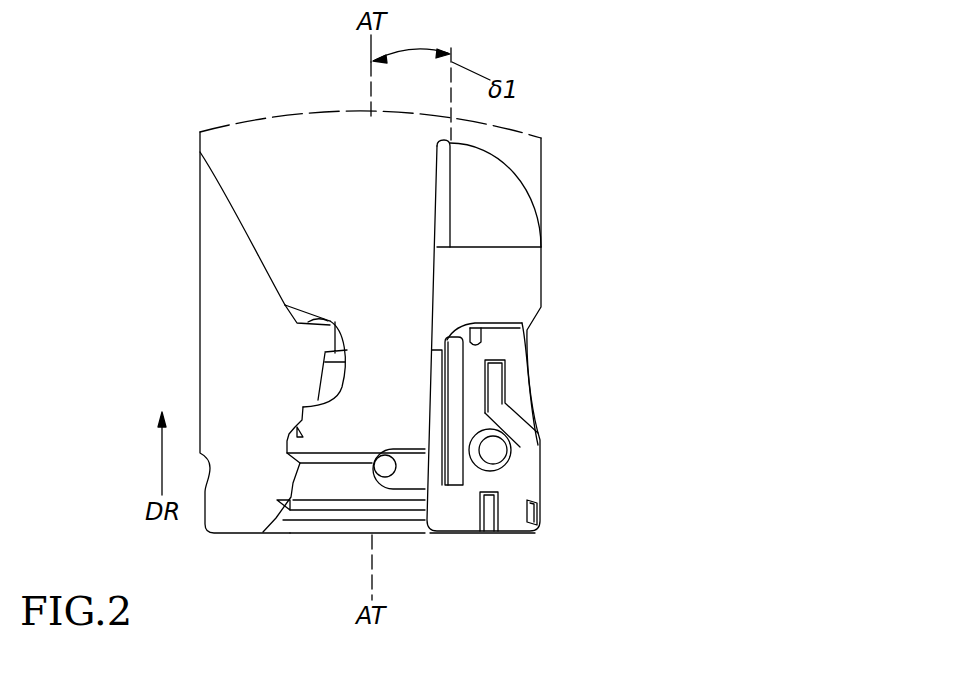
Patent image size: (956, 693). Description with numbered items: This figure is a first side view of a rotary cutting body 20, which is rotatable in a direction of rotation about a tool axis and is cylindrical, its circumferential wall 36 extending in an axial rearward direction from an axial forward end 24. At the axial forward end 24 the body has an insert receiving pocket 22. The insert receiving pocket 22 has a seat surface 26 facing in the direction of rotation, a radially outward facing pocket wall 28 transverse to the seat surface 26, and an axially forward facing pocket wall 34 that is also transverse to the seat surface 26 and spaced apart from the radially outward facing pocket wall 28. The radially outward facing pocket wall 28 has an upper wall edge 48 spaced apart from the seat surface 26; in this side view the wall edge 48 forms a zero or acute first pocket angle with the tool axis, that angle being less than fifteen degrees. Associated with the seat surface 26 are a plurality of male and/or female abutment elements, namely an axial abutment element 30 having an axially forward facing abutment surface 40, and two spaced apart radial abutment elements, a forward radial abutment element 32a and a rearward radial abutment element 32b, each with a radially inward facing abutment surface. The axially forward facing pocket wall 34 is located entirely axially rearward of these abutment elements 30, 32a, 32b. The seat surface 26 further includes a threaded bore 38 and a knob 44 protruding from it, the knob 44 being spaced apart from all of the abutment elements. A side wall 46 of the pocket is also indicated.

The rotary cutting body 20 is at (183, 209).
The insert receiving pocket 22 is at (298, 406).
The axial forward end 24 is at (304, 541).
The seat surface 26 is at (540, 490).
The radially outward facing pocket wall 28 is at (427, 483).
The axial abutment element 30 is at (539, 431).
The forward radial abutment element 32a is at (493, 522).
The rearward radial abutment element 32b is at (510, 376).
The axially forward facing pocket wall 34 is at (507, 334).
The circumferential wall 36 is at (322, 237).
The threaded bore 38 is at (492, 446).
The axially forward facing abutment surface 40 is at (522, 483).
The knob 44 is at (539, 519).
The side wall 46 is at (543, 443).
The upper wall edge 48 is at (455, 455).